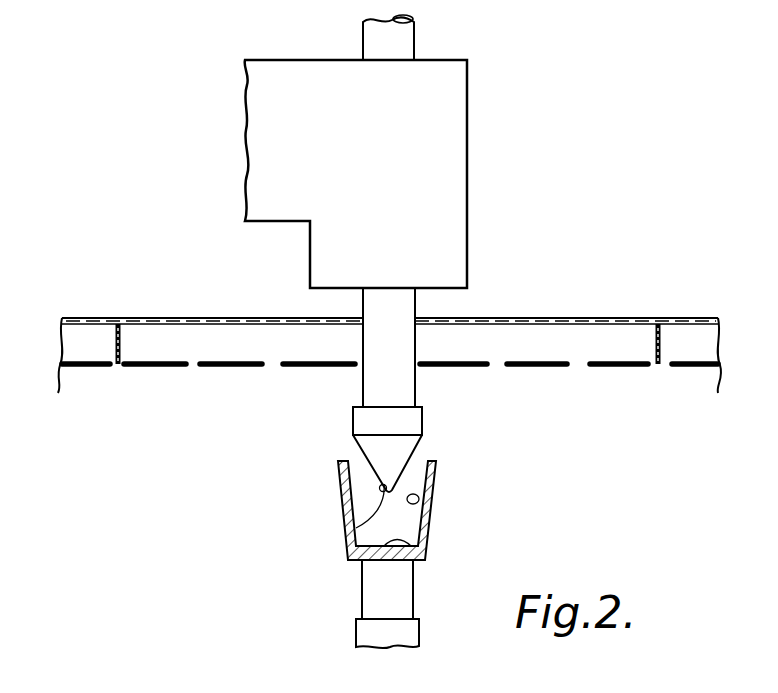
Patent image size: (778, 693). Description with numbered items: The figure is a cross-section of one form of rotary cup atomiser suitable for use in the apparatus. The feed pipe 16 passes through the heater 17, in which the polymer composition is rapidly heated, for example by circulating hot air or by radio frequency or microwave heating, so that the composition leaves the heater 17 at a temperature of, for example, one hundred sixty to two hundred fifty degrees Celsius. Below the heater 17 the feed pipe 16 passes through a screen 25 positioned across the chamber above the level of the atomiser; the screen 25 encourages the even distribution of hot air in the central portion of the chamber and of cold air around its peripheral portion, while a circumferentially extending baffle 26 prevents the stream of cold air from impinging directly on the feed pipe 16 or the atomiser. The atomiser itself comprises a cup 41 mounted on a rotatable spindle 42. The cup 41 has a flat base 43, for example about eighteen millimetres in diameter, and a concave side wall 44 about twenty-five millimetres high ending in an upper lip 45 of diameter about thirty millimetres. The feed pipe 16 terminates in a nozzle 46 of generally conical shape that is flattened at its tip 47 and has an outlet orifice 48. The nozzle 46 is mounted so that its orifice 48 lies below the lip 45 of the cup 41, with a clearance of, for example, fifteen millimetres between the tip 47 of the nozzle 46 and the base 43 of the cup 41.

The feed pipe 16 is at (395, 40).
The heater 17 is at (443, 157).
The screen 25 is at (558, 362).
The baffle 26 is at (116, 343).
The cup 41 is at (427, 531).
The rotatable spindle 42 is at (373, 583).
The flat base 43 is at (422, 548).
The concave side wall 44 is at (418, 498).
The upper lip 45 is at (432, 462).
The nozzle 46 is at (403, 446).
The tip 47 is at (358, 518).
The outlet orifice 48 is at (379, 488).